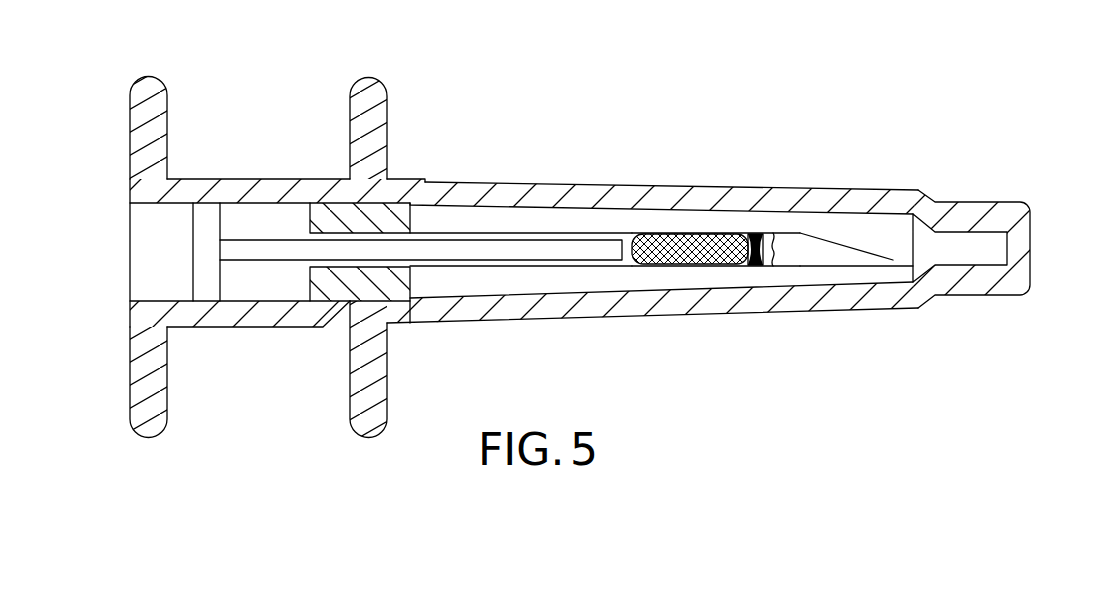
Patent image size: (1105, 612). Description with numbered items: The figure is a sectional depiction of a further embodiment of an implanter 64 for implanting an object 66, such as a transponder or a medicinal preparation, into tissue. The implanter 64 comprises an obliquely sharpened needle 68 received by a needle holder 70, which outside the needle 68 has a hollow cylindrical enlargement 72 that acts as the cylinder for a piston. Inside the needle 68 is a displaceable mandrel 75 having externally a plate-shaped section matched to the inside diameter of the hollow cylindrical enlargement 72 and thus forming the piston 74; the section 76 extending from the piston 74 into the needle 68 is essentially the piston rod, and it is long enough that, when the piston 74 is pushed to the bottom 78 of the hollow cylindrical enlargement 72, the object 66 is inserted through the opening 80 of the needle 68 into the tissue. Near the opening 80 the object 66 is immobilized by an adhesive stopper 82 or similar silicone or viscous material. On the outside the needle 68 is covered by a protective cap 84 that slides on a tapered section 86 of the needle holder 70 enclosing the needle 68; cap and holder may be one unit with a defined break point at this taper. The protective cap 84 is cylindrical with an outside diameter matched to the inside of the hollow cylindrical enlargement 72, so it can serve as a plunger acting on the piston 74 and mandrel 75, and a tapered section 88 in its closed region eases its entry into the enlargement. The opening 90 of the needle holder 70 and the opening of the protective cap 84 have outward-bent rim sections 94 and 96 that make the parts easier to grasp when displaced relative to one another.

The implanter 64 is at (95, 158).
The object 66 is at (708, 240).
The needle 68 is at (627, 270).
The needle holder 70 is at (320, 190).
The hollow cylindrical enlargement 72 is at (140, 311).
The piston 74 is at (211, 290).
The mandrel 75 is at (543, 240).
The piston rod section 76 is at (250, 253).
The bottom 78 is at (290, 293).
The opening 80 is at (845, 238).
The adhesive stopper 82 is at (757, 235).
The protective cap 84 is at (822, 308).
The tapered section 86 is at (393, 208).
The tapered section 88 is at (1002, 296).
The opening 90 is at (135, 238).
The rim section 94 is at (368, 88).
The rim section 96 is at (153, 86).